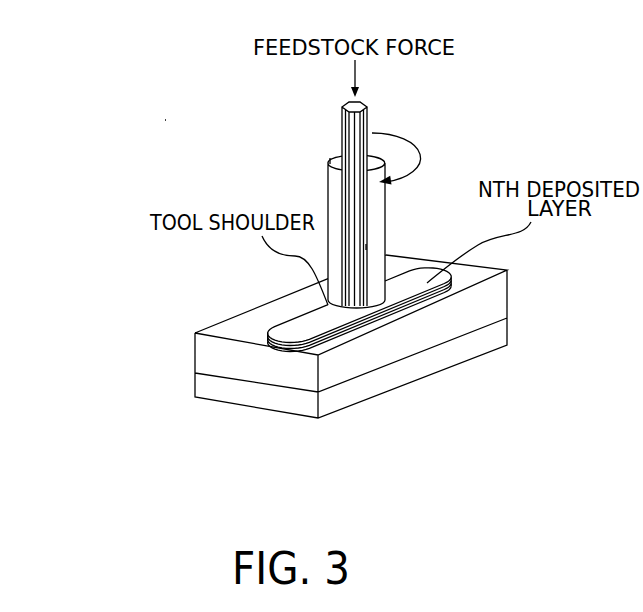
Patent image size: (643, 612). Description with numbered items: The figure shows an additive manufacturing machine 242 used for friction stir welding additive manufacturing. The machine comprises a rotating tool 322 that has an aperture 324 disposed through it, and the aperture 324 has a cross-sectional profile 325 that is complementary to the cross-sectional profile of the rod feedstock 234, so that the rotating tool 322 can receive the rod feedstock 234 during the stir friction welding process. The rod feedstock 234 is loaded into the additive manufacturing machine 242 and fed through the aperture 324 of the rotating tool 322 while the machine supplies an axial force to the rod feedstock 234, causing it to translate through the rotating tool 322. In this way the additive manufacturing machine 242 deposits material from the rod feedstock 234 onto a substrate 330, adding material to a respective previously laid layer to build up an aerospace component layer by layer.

The additive manufacturing machine 242 is at (152, 113).
The rod feedstock 234 is at (367, 120).
The rotating tool 322 is at (314, 180).
The aperture 324 is at (329, 160).
The cross-sectional profile 325 is at (367, 248).
The substrate 330 is at (236, 318).